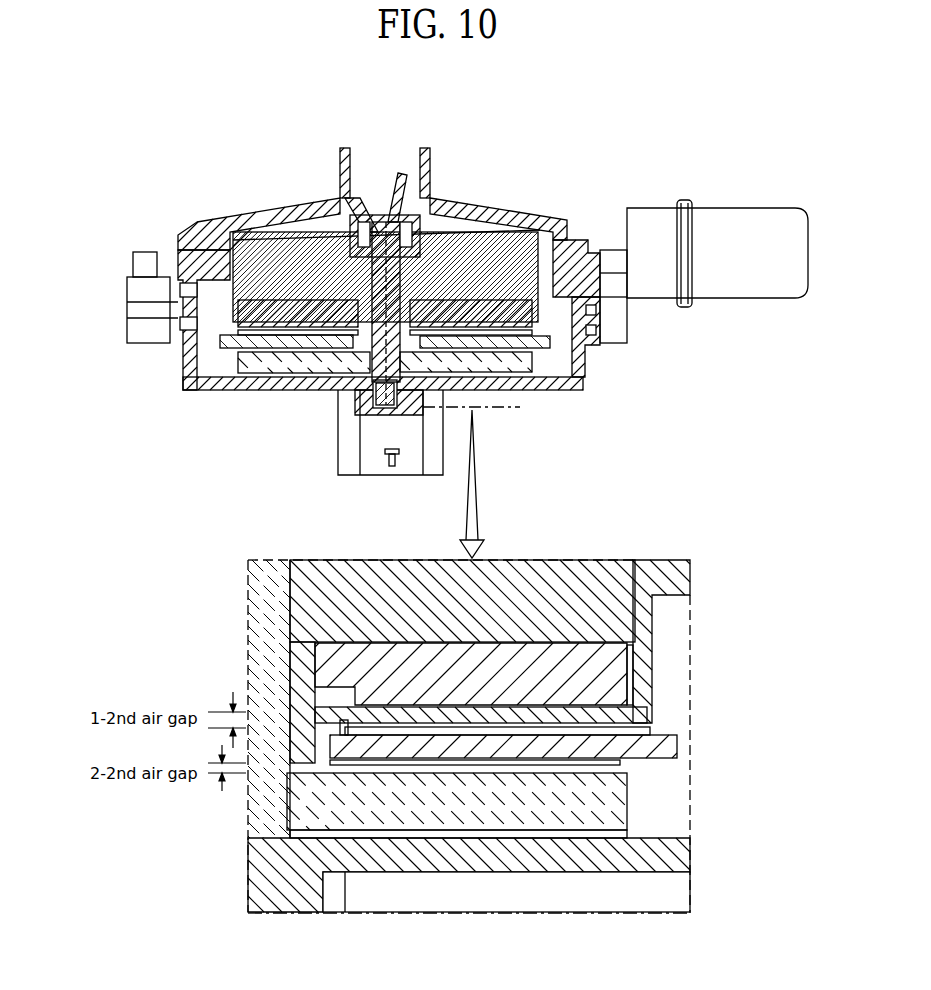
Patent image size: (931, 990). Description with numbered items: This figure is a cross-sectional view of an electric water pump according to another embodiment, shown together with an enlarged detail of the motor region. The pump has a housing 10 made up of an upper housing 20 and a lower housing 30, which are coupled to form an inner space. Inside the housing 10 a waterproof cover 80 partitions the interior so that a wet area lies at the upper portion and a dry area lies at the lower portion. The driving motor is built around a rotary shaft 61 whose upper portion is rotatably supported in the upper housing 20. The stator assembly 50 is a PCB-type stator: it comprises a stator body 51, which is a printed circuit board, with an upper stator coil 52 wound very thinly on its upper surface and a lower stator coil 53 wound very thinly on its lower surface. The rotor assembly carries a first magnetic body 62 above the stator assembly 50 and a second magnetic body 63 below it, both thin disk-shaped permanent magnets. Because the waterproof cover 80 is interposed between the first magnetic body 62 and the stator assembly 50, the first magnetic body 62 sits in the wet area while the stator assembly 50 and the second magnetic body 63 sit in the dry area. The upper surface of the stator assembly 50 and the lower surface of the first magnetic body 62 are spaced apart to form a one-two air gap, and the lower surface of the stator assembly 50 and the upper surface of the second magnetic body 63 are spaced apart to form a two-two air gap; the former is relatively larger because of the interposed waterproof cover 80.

The housing 10 is at (120, 299).
The upper housing 20 is at (160, 257).
The lower housing 30 is at (137, 312).
The stator assembly 50 is at (558, 345).
The stator body 51 is at (668, 748).
The upper stator coil 52 is at (608, 731).
The lower stator coil 53 is at (612, 763).
The rotary shaft 61 is at (398, 288).
The first magnetic body 62 is at (513, 313).
The second magnetic body 63 is at (523, 363).
The waterproof cover 80 is at (568, 265).